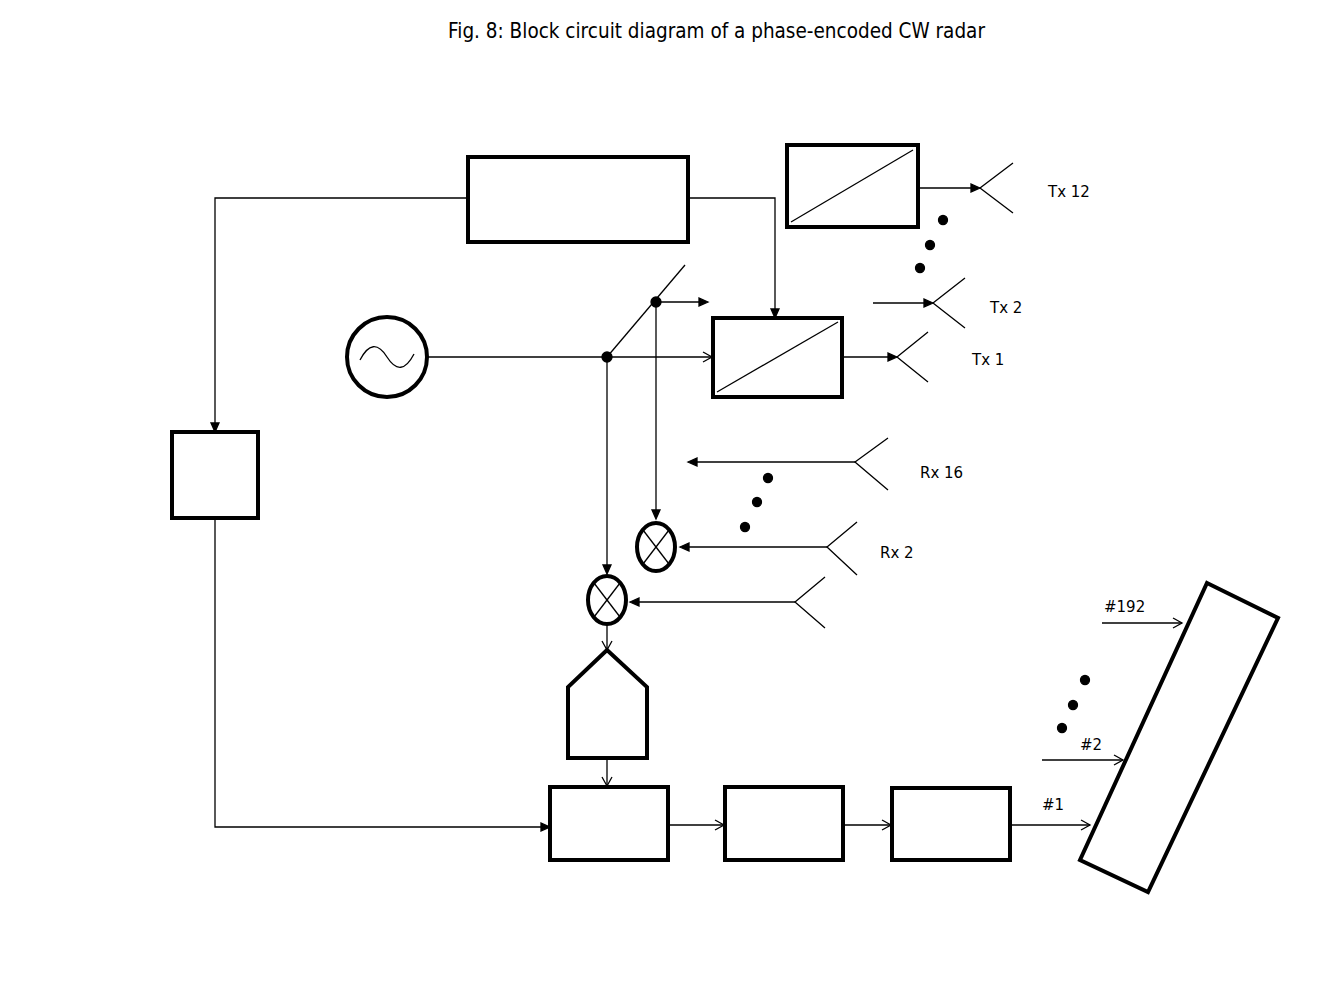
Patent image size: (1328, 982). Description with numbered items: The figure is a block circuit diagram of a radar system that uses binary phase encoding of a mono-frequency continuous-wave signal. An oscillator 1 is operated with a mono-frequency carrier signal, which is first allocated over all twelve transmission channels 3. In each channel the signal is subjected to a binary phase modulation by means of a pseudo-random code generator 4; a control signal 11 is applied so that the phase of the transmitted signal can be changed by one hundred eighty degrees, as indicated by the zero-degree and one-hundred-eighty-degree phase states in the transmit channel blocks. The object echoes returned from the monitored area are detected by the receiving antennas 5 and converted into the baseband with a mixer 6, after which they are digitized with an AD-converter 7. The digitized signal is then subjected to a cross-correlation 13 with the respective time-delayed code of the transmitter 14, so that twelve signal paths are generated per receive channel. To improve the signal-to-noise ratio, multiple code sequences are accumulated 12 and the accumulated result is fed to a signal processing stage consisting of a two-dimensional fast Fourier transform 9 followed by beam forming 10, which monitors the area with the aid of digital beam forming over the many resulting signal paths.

The oscillator 1 is at (395, 393).
The transmission channels 3 is at (945, 188).
The pseudo-random code generator 4 is at (815, 328).
The receiving antennas 5 is at (750, 602).
The mixer 6 is at (588, 601).
The AD-converter 7 is at (580, 700).
The 2D FFT 9 is at (970, 845).
The beam forming 10 is at (1247, 632).
The control signal 11 is at (578, 178).
The accumulation 12 is at (797, 848).
The cross-correlation 13 is at (598, 843).
The time-delayed code of the transmitter 14 is at (228, 502).